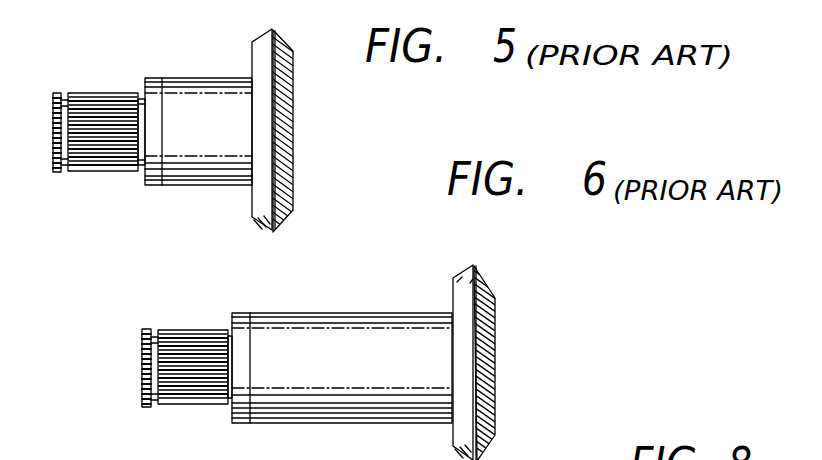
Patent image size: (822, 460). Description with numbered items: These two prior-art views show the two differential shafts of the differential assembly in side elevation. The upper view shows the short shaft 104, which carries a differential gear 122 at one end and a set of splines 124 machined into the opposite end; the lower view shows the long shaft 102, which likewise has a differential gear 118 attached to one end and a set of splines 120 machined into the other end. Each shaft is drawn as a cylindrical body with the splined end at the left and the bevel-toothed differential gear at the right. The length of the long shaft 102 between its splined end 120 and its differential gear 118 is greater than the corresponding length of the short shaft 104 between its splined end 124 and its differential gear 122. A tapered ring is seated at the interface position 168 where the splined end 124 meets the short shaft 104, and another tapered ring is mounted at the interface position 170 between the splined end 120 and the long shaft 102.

In FIG. 6, the long shaft 102 is at (366, 311).
In FIG. 5, the short shaft 104 is at (194, 75).
In FIG. 6, the differential gear 118 is at (492, 347).
In FIG. 6, the splines 120 is at (172, 404).
In FIG. 5, the differential gear 122 is at (297, 136).
In FIG. 5, the splines 124 is at (91, 172).
In FIG. 5, the interface position 168 is at (140, 97).
In FIG. 6, the interface position 170 is at (228, 327).